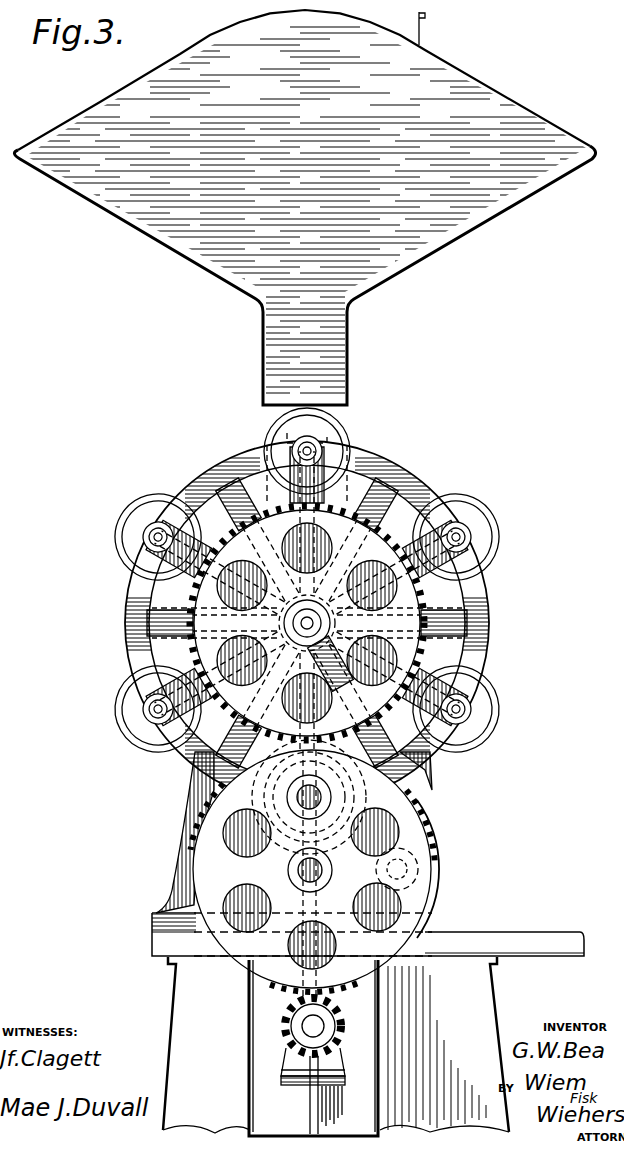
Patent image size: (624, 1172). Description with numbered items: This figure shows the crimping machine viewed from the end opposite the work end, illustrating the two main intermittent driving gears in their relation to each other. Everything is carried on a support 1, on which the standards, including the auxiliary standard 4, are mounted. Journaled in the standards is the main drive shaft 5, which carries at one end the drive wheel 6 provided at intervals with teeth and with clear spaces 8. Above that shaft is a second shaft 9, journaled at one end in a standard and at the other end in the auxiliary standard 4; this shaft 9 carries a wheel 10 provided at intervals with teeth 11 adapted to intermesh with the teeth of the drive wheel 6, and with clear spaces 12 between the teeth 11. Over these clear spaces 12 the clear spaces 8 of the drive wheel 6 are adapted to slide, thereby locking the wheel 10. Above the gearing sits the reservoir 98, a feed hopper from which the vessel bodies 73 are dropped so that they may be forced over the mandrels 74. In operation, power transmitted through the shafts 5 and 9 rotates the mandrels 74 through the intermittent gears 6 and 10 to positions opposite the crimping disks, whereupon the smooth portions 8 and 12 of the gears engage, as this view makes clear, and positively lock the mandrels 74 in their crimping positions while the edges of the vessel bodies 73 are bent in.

The support 1 is at (488, 988).
The auxiliary standard 4 is at (436, 807).
The main drive shaft 5 is at (322, 870).
The drive wheel 6 is at (425, 865).
The clear spaces 8 is at (432, 885).
The second shaft 9 is at (318, 622).
The wheel 10 is at (420, 641).
The teeth 11 is at (328, 623).
The clear spaces 12 is at (240, 556).
The vessel bodies 73 is at (344, 435).
The mandrels 74 is at (288, 431).
The reservoir 98 is at (276, 298).